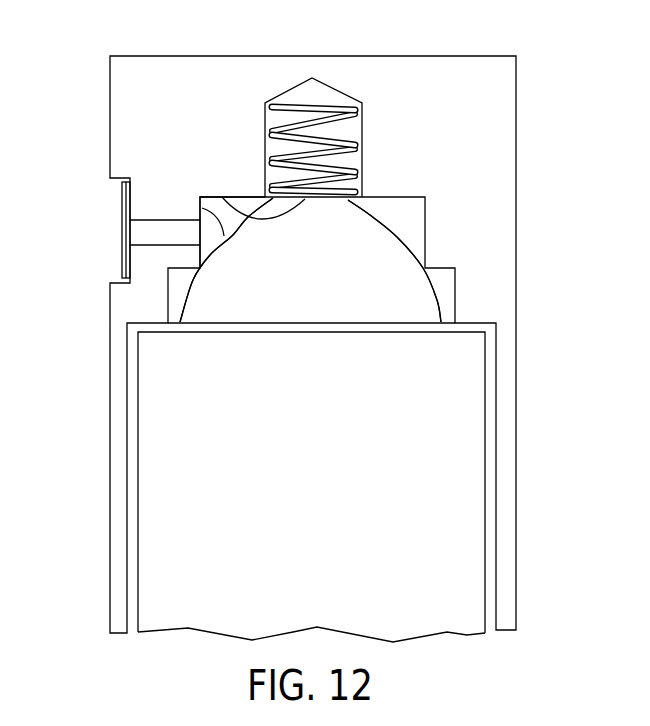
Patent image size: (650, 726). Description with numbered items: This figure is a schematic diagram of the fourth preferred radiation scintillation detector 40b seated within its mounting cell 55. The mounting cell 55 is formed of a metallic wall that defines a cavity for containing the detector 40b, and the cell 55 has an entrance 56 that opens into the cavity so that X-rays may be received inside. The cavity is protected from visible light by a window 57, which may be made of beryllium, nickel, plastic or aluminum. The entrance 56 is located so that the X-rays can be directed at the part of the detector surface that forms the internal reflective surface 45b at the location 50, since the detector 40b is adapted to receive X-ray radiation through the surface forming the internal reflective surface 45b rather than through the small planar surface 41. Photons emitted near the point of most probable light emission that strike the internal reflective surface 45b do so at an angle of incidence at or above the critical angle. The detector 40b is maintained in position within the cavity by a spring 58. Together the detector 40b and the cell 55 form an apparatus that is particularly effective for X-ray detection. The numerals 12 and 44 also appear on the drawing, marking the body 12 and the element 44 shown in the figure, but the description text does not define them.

The housing body 12 is at (318, 465).
The fourth radiation scintillation detector 40b is at (402, 236).
The small planar surface 41 is at (225, 197).
The cam 44 is at (345, 323).
The internal reflective surface 45b is at (198, 279).
The location where X-rays are received 50 is at (201, 207).
The mounting cell 55 is at (517, 155).
The entrance 56 is at (157, 247).
The window 57 is at (122, 208).
The spring 58 is at (328, 108).